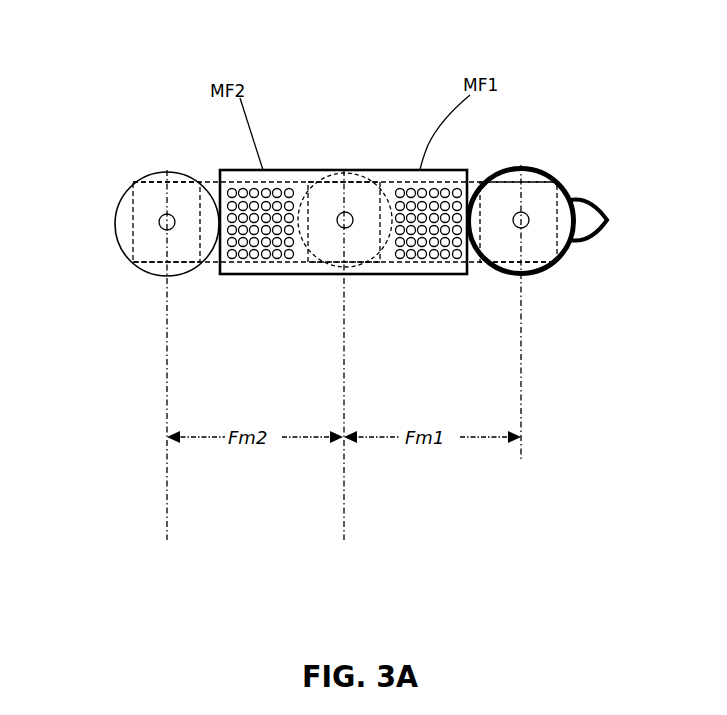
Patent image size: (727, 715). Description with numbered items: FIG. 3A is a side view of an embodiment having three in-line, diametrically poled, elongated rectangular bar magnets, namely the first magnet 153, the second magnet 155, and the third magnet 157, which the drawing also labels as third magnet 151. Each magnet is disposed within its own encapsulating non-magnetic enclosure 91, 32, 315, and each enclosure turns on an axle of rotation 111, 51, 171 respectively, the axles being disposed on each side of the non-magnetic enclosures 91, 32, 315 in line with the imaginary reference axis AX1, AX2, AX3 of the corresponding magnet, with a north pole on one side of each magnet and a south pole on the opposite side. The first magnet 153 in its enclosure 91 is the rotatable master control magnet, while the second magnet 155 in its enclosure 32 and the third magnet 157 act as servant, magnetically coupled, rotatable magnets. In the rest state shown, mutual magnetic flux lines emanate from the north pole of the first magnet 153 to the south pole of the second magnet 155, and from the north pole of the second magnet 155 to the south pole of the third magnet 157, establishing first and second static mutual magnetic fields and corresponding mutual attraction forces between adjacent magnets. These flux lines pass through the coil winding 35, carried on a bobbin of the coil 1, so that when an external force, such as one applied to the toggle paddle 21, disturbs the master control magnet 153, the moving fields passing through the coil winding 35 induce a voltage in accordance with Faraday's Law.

The coil 1 is at (386, 170).
The toggle paddle 21 is at (607, 228).
The non-magnetic enclosure 32 is at (314, 172).
The coil winding 35 is at (243, 176).
The axle of rotation 51 is at (345, 170).
The non-magnetic enclosure 91 is at (528, 209).
The axle of rotation 111 is at (565, 183).
The third magnet 151 is at (176, 174).
The first magnet 153 is at (557, 240).
The second magnet 155 is at (250, 277).
The third magnet 157 is at (118, 249).
The axle of rotation 171 is at (164, 232).
The non-magnetic enclosure 315 is at (116, 220).
The imaginary reference axis AX1 is at (516, 212).
The imaginary reference axis AX2 is at (344, 212).
The imaginary reference axis AX3 is at (172, 177).